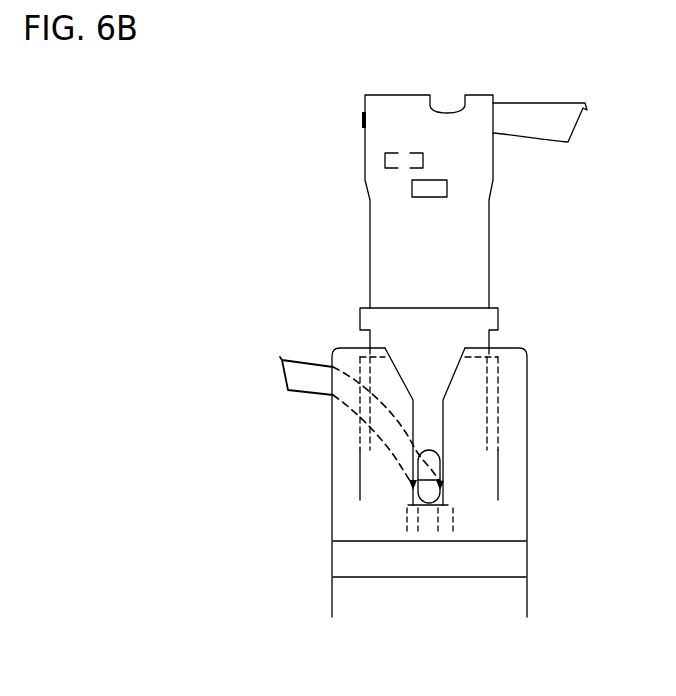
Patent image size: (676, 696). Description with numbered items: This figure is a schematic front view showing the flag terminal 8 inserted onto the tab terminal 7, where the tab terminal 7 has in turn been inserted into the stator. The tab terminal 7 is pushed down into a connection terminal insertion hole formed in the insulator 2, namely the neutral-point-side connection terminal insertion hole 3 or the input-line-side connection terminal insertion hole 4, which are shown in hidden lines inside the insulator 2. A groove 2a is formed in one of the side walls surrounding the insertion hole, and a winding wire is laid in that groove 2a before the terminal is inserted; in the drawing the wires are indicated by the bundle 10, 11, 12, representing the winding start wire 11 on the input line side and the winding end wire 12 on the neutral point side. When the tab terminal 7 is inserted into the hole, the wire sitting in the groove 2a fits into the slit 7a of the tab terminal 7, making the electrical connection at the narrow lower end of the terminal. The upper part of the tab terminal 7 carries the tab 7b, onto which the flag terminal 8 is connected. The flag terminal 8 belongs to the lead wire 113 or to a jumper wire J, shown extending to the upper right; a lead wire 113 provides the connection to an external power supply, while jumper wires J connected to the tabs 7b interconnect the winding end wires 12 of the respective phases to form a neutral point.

The insulator 2 is at (513, 463).
The groove 2a is at (447, 468).
The neutral-point-side connection terminal insertion hole 3 is at (360, 352).
The input-line-side connection terminal insertion hole 4 is at (395, 388).
The tab terminal 7 is at (440, 357).
The slit 7a is at (441, 452).
The tab 7b is at (499, 322).
The flag terminal 8 is at (366, 148).
The cable 10 is at (308, 381).
The winding start wire 11 is at (305, 405).
The winding end wire 12 is at (305, 405).
The lead wire 113 is at (522, 103).
The jumper wire J is at (552, 86).